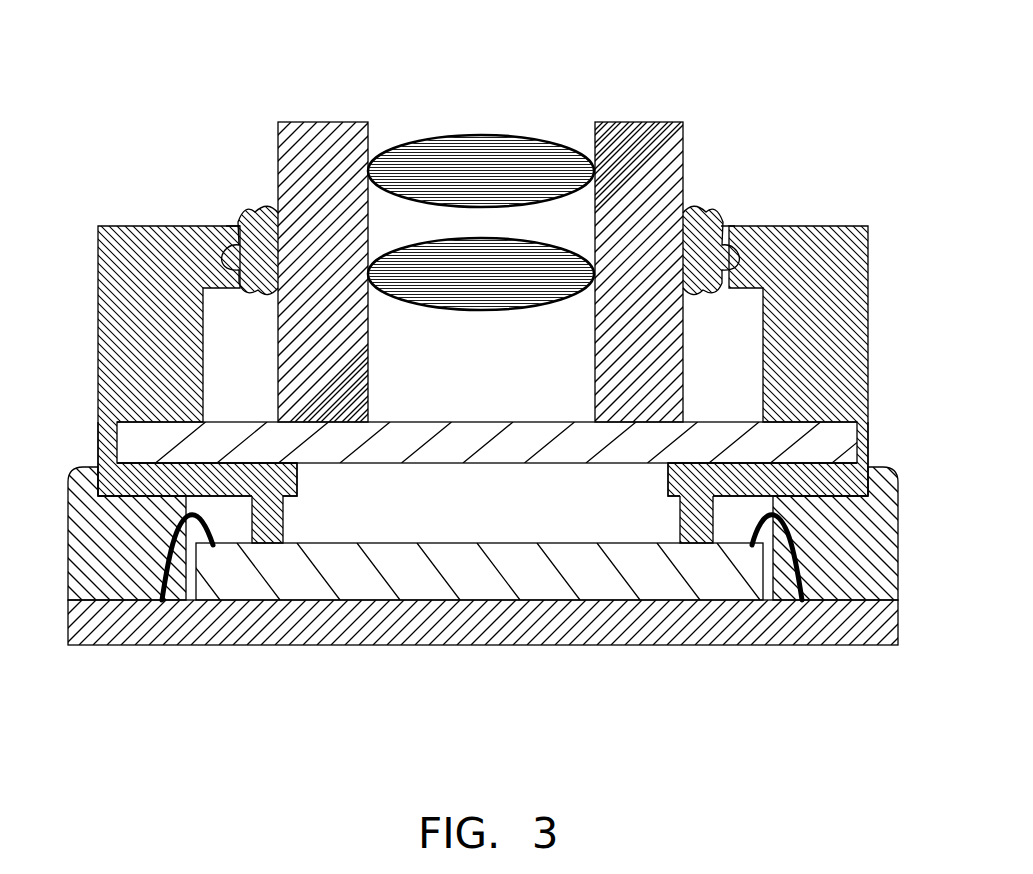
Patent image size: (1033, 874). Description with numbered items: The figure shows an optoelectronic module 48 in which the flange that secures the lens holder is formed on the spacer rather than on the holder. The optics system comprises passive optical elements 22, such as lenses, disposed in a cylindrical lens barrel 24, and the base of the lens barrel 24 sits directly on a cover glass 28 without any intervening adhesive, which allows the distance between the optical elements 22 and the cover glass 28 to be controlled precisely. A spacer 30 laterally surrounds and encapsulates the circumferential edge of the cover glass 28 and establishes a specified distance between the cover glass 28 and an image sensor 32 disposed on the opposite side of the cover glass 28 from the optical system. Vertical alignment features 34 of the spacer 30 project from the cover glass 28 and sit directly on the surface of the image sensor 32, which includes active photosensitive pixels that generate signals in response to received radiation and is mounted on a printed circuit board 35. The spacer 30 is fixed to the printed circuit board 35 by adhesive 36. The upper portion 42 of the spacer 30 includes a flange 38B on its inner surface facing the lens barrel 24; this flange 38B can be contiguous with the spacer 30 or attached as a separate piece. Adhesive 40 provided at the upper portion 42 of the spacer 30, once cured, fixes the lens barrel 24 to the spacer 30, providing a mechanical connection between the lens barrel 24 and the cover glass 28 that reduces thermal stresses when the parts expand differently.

The passive optical elements 22 is at (478, 245).
The lens barrel 24 is at (280, 137).
The cover glass 28 is at (430, 422).
The spacer 30 is at (107, 440).
The image sensor 32 is at (445, 557).
The vertical alignment features 34 is at (283, 520).
The printed circuit board 35 is at (332, 633).
The adhesive 36 is at (70, 530).
The flange 38B is at (237, 227).
The adhesive 40 is at (263, 212).
The upper portion of the spacer 42 is at (100, 282).
The module 48 is at (826, 125).